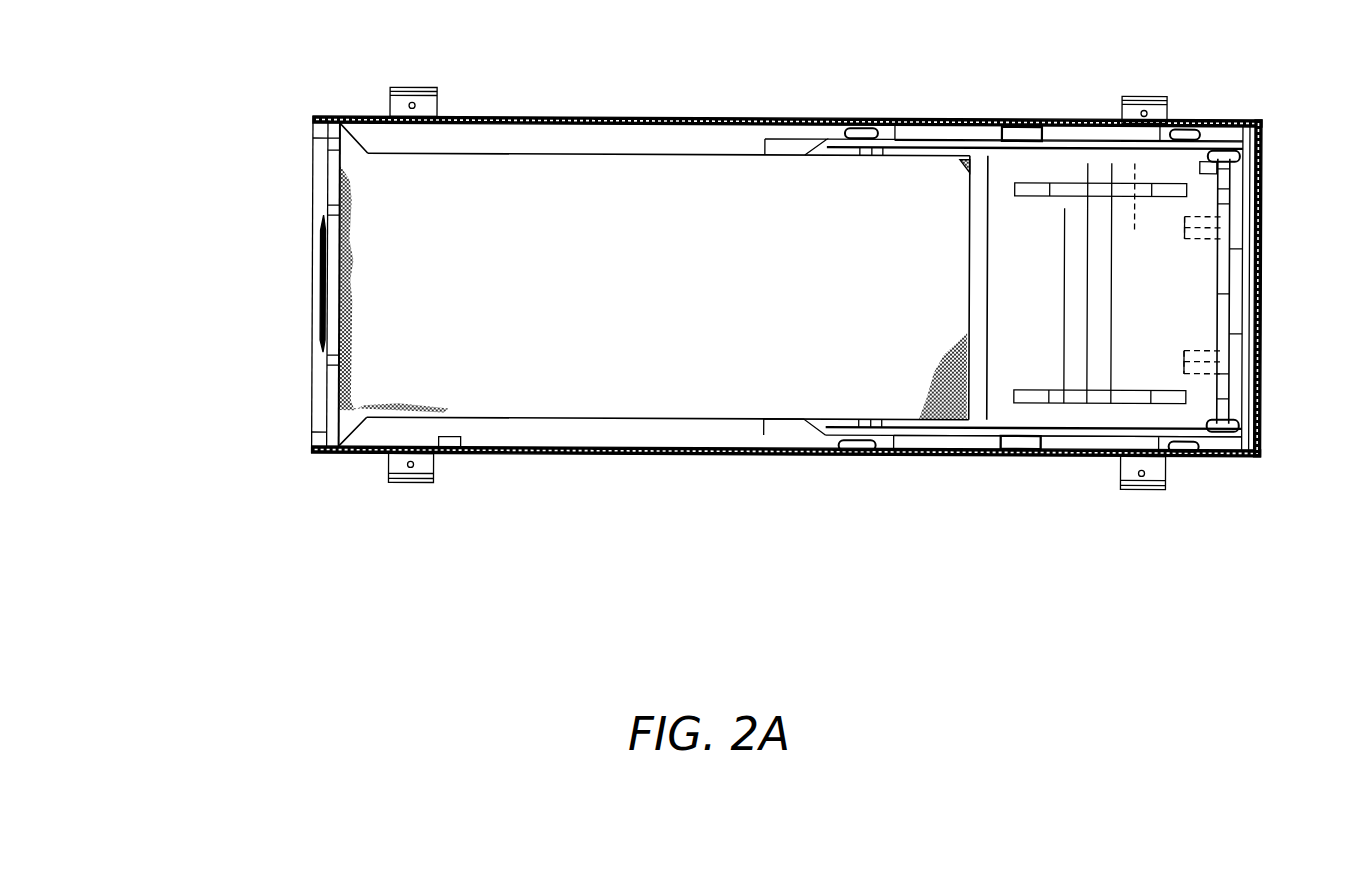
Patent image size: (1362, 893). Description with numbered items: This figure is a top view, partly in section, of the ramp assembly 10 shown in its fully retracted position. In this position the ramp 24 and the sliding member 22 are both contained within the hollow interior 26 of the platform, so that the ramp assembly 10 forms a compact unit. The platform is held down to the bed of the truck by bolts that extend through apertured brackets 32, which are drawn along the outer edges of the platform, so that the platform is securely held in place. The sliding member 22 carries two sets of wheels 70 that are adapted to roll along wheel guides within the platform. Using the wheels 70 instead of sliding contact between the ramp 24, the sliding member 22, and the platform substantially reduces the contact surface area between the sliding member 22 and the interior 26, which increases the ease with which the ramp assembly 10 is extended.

The ramp assembly 10 is at (262, 493).
The sliding member 22 is at (1082, 138).
The ramp 24 is at (360, 178).
The hollow interior 26 is at (290, 293).
The apertured brackets 32 is at (437, 92).
The wheels 70 is at (862, 122).